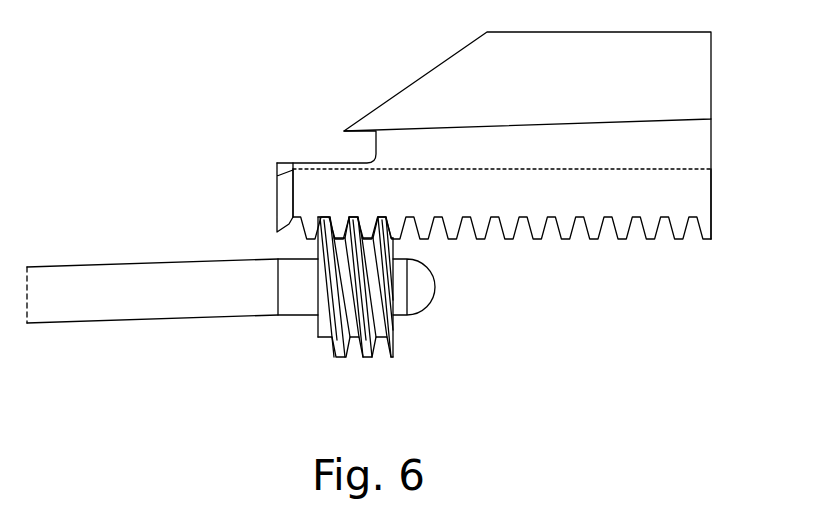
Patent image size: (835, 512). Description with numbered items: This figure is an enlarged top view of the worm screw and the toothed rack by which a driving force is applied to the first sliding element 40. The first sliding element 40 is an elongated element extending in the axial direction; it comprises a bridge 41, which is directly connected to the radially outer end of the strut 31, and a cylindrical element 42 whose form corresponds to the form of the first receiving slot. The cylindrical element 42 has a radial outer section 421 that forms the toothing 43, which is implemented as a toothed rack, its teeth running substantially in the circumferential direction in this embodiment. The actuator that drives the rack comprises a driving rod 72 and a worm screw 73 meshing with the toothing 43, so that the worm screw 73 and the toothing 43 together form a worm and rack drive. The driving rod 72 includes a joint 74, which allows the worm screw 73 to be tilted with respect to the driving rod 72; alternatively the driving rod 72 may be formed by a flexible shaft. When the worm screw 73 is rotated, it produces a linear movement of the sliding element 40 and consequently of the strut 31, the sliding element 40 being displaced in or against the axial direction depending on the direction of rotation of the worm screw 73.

The strut 31 is at (693, 78).
The first sliding element 40 is at (494, 220).
The bridge 41 is at (693, 148).
The cylindrical element 42 is at (693, 186).
The radial outer section 421 is at (270, 220).
The toothing 43 is at (603, 232).
The driving rod 72 is at (231, 312).
The worm screw 73 is at (375, 352).
The joint 74 is at (276, 280).